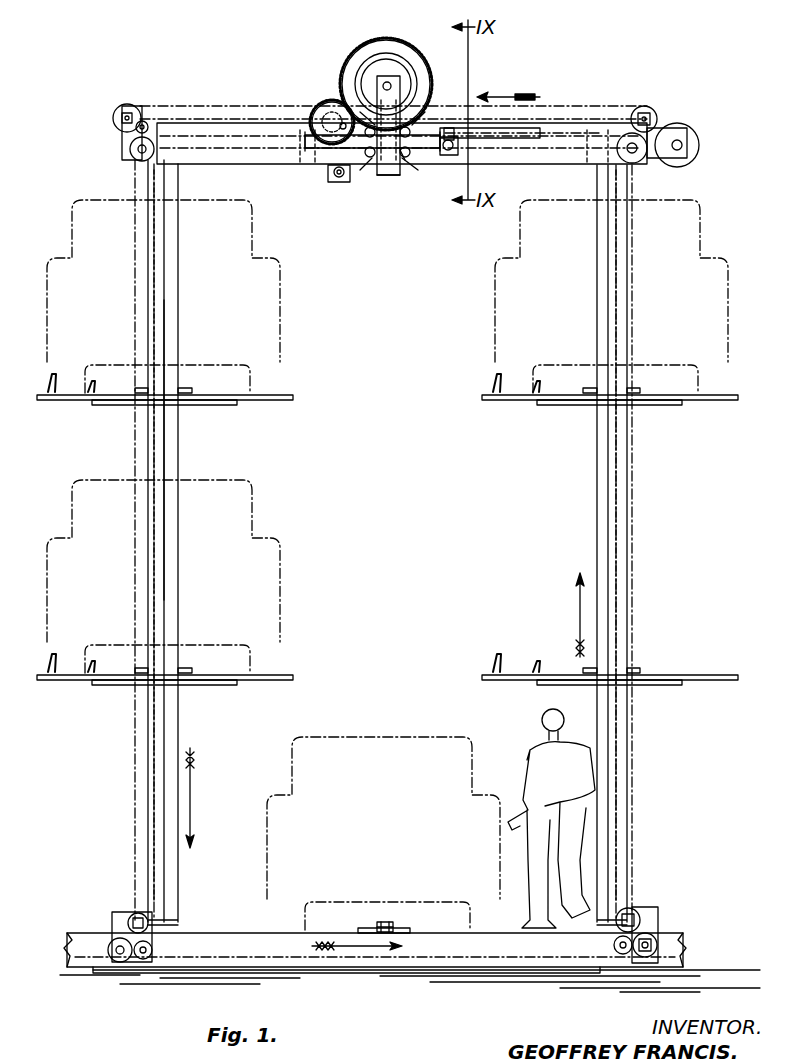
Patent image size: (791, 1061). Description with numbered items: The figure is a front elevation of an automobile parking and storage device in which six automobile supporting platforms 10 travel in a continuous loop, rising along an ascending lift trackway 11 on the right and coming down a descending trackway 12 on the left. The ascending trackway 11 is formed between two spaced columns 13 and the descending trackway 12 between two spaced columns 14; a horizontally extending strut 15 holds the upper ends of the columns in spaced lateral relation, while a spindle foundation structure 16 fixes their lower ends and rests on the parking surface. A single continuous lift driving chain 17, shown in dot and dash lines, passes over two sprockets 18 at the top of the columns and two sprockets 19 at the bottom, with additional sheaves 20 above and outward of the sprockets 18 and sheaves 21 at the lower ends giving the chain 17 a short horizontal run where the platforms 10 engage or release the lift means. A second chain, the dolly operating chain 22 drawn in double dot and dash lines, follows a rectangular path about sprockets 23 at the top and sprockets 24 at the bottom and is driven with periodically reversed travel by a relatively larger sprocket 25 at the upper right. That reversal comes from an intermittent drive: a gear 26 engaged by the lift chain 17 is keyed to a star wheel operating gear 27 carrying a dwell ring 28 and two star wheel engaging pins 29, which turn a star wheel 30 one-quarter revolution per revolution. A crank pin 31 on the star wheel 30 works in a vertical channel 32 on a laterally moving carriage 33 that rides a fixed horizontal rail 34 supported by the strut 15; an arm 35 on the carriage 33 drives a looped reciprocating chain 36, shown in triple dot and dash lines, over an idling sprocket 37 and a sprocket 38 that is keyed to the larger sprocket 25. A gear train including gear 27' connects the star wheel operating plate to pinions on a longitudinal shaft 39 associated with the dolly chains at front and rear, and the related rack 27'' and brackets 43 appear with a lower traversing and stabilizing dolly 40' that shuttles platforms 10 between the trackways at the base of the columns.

The automobile supporting platform 10 is at (212, 402).
The ascending lift trackway 11 is at (600, 552).
The descending trackway 12 is at (172, 598).
The column or rail forming member 13 is at (600, 446).
The column or rail forming member 14 is at (180, 450).
The horizontally extending strut 15 is at (265, 150).
The spindle foundation structure 16 is at (425, 955).
The lift driving chain 17 is at (548, 108).
The sprocket 18 is at (128, 149).
The sprocket 19 is at (135, 915).
The sprocket or sheave 20 is at (120, 110).
The sprocket or sheave 21 is at (108, 950).
The dolly operating chain 22 is at (225, 105).
The sheave or sprocket 23 is at (143, 120).
The sheave or sprocket 24 is at (142, 960).
The larger sprocket 25 is at (690, 136).
The gear 26 is at (378, 70).
The star wheel operating gear 27 is at (403, 66).
The gear 27' is at (319, 105).
The rack 27'' is at (351, 141).
The dwell ring 28 is at (388, 65).
The star wheel engaging pin 29 is at (365, 130).
The star wheel 30 is at (410, 158).
The crank pin 31 is at (395, 100).
The vertical channel 32 is at (385, 178).
The laterally moving carriage 33 is at (404, 160).
The fixed horizontal rail 34 is at (325, 168).
The arm 35 is at (530, 148).
The looped reciprocating chain 36 is at (555, 158).
The sprocket 37 is at (452, 152).
The sprocket 38 is at (684, 150).
The longitudinal shaft 39 is at (340, 180).
The traversing and stabilizing dolly 40' is at (402, 904).
The bracket 43 is at (186, 388).